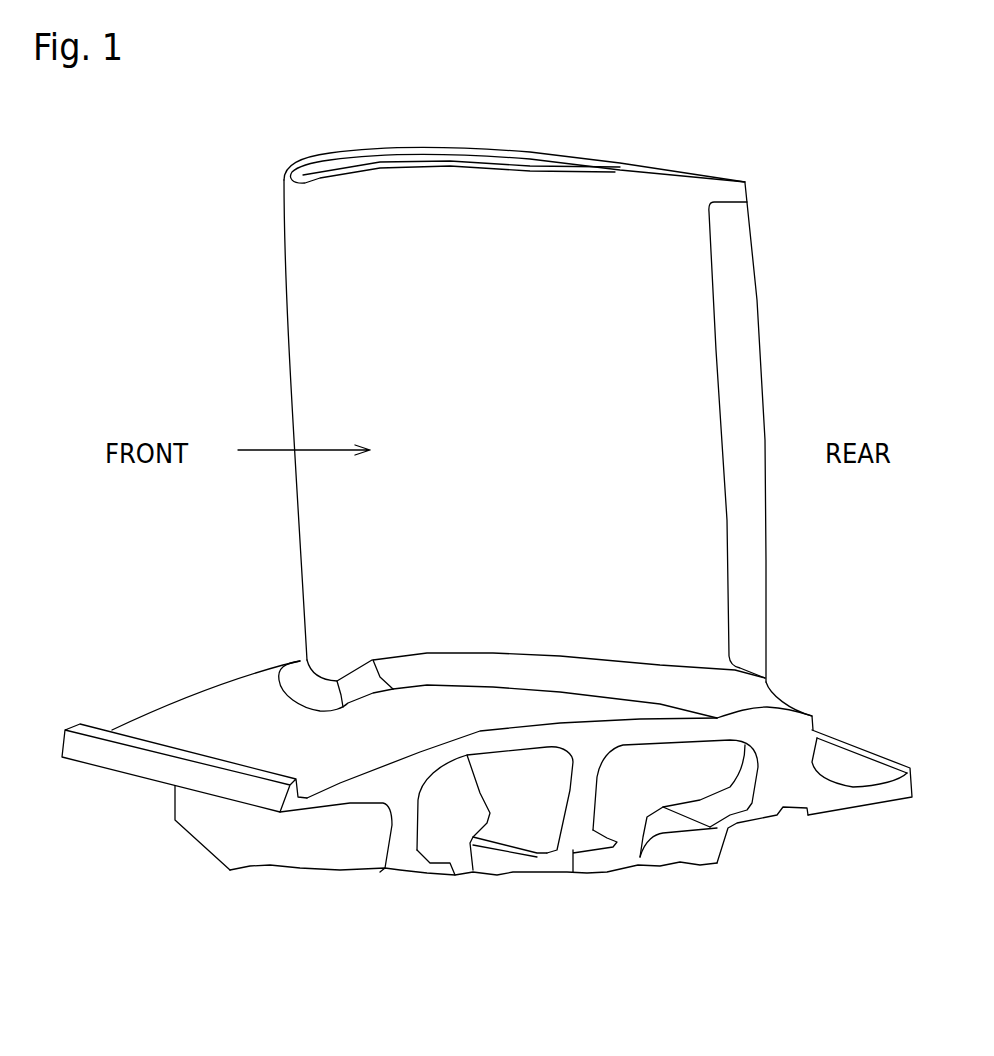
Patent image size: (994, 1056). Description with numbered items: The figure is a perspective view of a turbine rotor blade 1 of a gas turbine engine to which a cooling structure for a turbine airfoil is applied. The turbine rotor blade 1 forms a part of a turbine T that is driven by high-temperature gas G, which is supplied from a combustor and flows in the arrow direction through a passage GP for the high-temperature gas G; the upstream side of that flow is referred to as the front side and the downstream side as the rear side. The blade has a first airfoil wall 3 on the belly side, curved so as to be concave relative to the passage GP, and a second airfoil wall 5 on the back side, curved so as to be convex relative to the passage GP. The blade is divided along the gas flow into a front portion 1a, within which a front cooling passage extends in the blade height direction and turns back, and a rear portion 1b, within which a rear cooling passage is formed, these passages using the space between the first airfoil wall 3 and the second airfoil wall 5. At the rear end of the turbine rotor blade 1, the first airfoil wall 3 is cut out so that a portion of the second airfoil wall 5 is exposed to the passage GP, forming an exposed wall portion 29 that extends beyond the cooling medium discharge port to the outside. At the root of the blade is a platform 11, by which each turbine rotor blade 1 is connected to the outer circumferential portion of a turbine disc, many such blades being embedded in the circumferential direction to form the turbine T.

The turbine rotor blade 1 is at (305, 238).
The front portion 1a is at (315, 352).
The rear portion 1b is at (756, 355).
The first airfoil wall 3 is at (457, 170).
The second airfoil wall 5 is at (507, 148).
The exposed wall portion 29 is at (745, 298).
The platform 11 is at (195, 705).
The turbine T is at (722, 160).
The high-temperature gas G is at (253, 452).
The passage GP is at (240, 591).